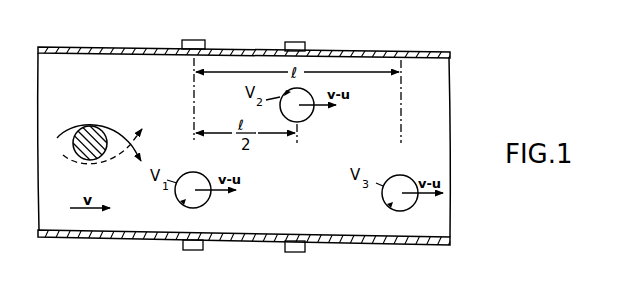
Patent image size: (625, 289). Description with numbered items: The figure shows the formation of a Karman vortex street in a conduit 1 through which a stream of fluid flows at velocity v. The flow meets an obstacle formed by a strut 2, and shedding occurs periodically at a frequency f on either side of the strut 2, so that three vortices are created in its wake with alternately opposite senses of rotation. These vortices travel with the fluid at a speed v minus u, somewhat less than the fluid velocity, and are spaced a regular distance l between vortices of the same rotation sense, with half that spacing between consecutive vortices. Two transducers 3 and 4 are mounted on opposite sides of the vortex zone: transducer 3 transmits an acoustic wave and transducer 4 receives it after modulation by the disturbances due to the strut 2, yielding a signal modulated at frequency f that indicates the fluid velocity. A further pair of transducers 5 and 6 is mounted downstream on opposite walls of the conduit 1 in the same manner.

The conduit 1 is at (355, 52).
The strut 2 is at (87, 127).
The transducer 3 is at (205, 42).
The transducer 4 is at (203, 250).
The first downstream sensor 5 is at (305, 44).
The second downstream sensor 6 is at (295, 252).